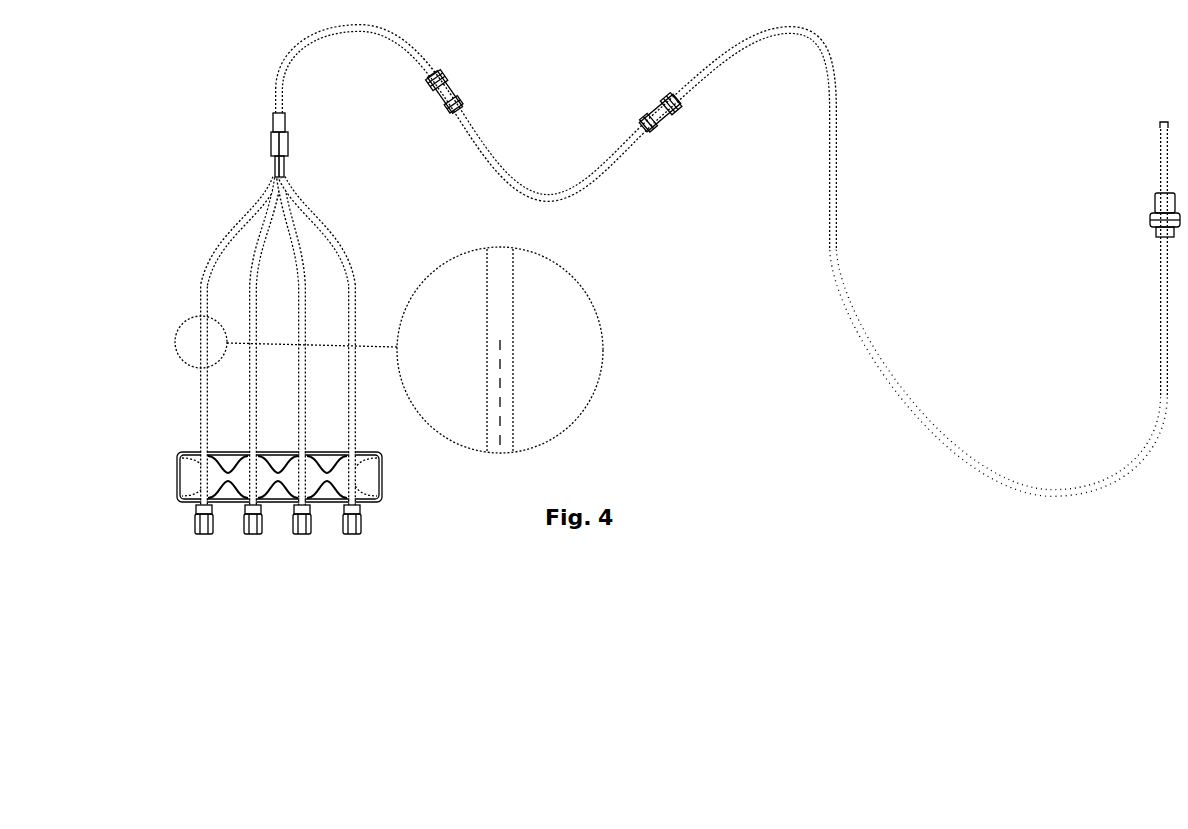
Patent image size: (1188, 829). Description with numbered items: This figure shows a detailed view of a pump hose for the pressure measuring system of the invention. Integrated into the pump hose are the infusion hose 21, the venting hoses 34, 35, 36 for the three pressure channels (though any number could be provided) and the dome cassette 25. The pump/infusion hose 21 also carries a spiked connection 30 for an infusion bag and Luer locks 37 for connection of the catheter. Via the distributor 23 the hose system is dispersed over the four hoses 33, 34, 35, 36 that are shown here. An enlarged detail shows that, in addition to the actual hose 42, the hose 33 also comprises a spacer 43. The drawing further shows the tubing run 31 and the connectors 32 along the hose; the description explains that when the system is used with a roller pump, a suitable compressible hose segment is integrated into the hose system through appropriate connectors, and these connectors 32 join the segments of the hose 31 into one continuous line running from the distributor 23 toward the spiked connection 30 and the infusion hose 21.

The infusion hose 21 is at (1071, 491).
The distributor 23 is at (272, 142).
The dome cassette 25 is at (394, 478).
The spiked connection 30 is at (1146, 213).
The tubing 31 is at (560, 199).
The luer connector 32 is at (441, 98).
The hose 33 is at (198, 385).
The venting hose 34 is at (250, 399).
The venting hose 35 is at (300, 376).
The venting hose 36 is at (349, 403).
The Luer locks 37 is at (350, 534).
The actual hose 42 is at (499, 385).
The spacer 43 is at (486, 357).